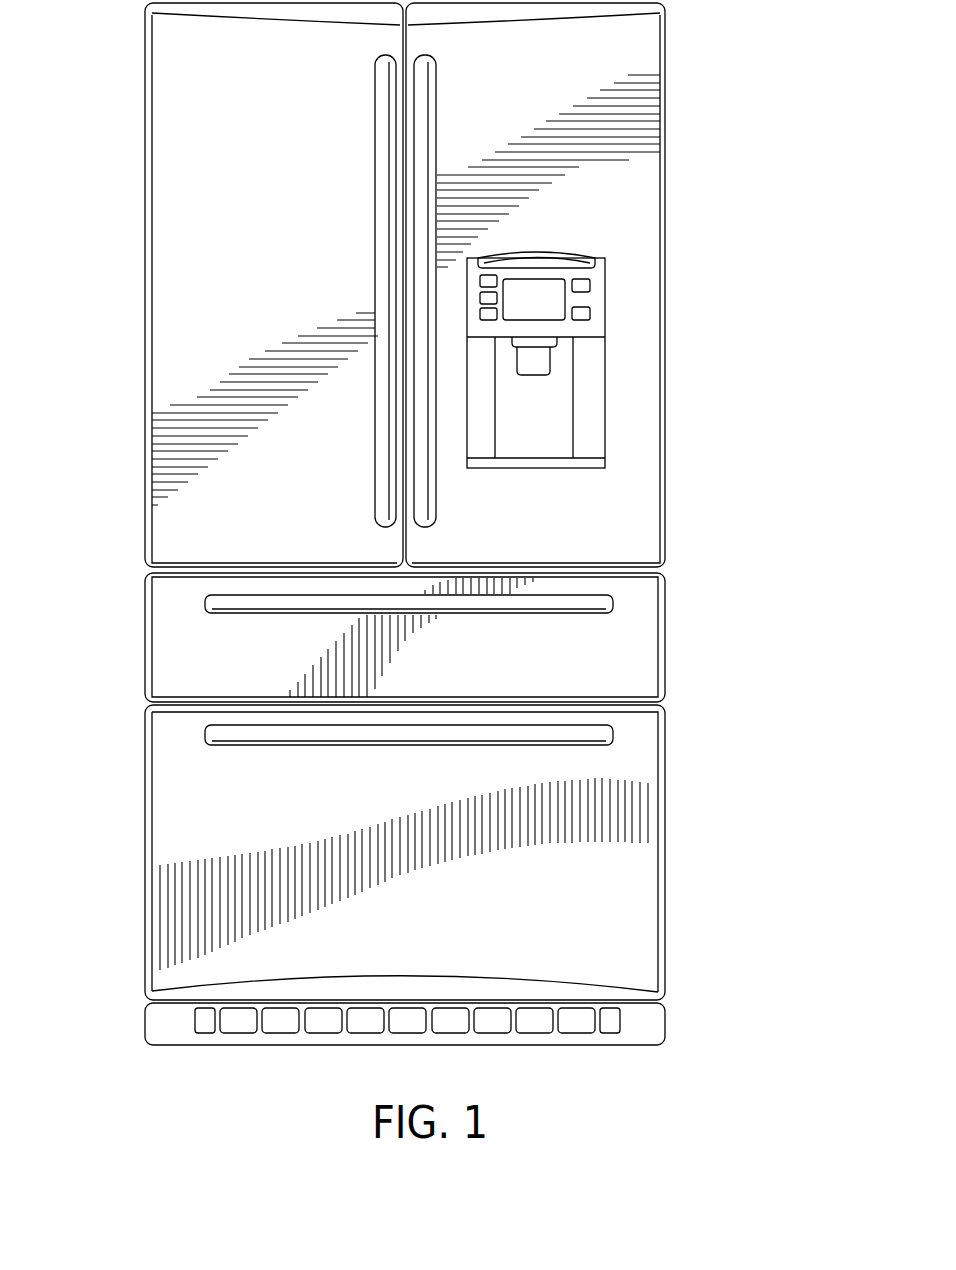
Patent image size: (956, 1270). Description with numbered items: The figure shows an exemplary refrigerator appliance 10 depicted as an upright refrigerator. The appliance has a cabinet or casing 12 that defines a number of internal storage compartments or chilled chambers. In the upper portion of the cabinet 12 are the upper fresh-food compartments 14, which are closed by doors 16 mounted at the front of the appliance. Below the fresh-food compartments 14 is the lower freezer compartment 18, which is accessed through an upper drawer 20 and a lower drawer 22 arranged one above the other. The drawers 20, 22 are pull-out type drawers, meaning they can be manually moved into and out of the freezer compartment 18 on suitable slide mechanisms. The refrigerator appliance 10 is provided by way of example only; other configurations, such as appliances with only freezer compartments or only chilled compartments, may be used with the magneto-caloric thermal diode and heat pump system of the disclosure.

The refrigerator appliance 10 is at (436, 524).
The cabinet 12 is at (665, 487).
The upper fresh-food compartments 14 is at (180, 204).
The doors 16 is at (308, 484).
The lower freezer compartment 18 is at (445, 637).
The upper drawer 20 is at (251, 669).
The lower drawer 22 is at (508, 932).